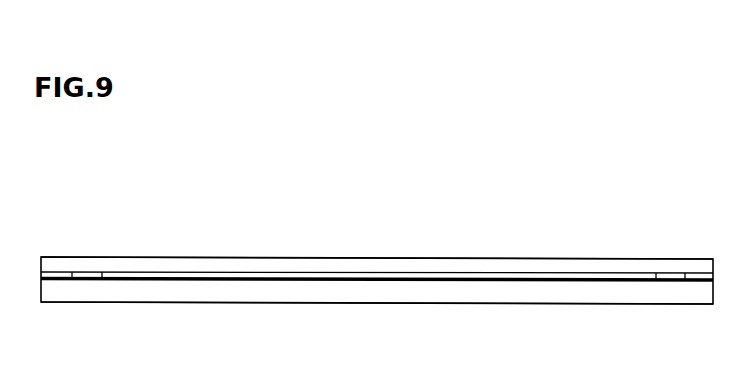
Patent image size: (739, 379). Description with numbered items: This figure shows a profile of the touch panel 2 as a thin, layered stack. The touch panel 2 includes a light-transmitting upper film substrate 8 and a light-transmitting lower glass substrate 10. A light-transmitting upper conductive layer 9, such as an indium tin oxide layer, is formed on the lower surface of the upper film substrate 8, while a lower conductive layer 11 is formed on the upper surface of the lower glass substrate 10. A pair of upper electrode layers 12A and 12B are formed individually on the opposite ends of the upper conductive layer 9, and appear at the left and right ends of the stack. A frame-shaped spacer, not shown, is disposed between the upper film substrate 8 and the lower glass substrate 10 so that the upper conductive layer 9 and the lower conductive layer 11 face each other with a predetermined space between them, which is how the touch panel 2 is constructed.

The touch panel 2 is at (455, 147).
The upper film substrate 8 is at (367, 271).
The upper conductive layer 9 is at (573, 273).
The lower glass substrate 10 is at (312, 297).
The lower conductive layer 11 is at (483, 282).
The upper electrode layer 12A is at (57, 277).
The upper electrode layer 12B is at (703, 280).